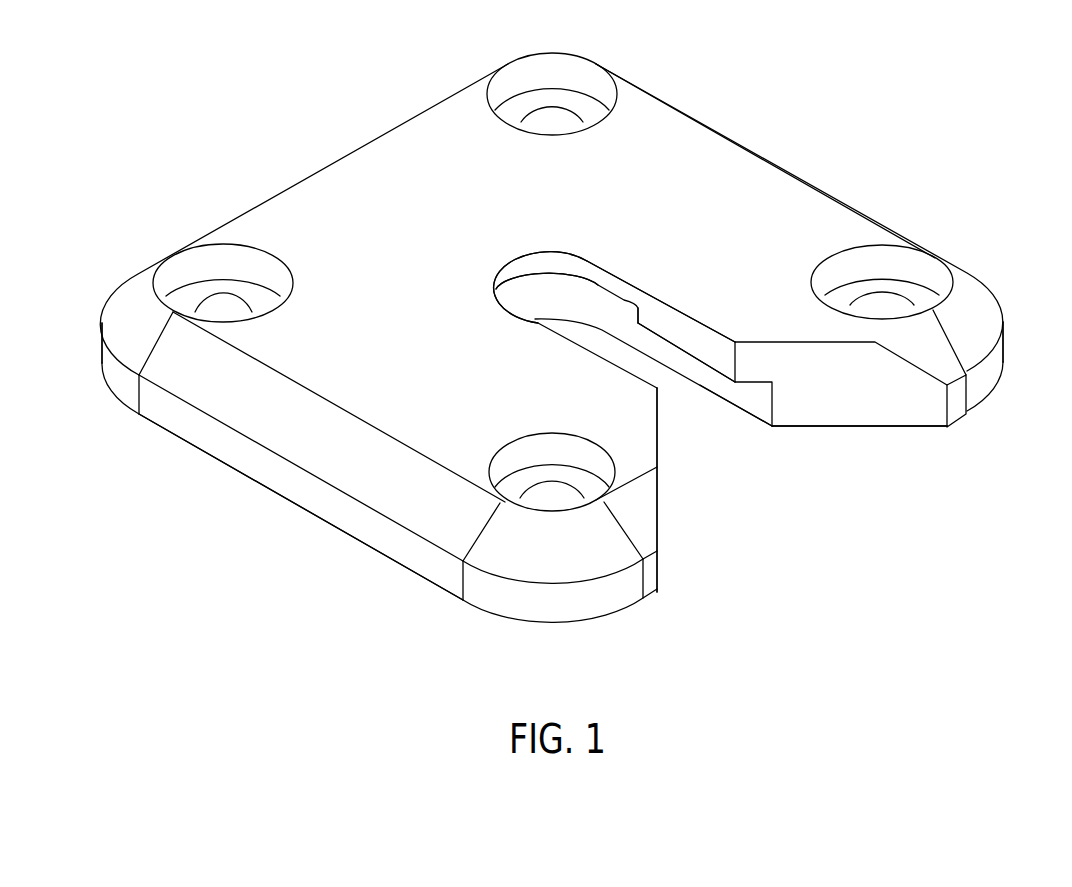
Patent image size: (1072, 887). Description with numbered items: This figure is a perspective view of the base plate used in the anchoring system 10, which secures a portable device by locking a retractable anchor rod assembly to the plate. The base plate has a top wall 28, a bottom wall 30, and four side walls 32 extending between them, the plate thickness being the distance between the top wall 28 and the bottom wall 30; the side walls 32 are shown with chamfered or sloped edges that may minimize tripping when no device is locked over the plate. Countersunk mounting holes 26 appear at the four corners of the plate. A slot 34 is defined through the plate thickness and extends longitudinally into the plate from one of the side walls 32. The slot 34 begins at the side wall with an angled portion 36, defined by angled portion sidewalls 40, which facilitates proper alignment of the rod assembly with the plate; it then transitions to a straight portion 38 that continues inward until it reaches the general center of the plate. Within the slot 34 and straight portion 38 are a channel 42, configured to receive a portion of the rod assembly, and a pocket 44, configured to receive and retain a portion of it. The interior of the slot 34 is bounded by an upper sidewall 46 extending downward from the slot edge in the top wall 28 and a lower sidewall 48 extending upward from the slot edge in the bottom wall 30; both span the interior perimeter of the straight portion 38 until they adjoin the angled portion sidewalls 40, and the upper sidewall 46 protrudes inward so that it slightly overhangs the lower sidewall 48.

The anchoring system 10 is at (245, 137).
The countersunk mounting holes 26 is at (552, 112).
The top wall 28 is at (740, 185).
The bottom wall 30 is at (392, 563).
The side walls 32 is at (292, 442).
The slot 34 is at (593, 242).
The angled portion 36 is at (798, 468).
The straight portion 38 is at (600, 307).
The angled portion sidewalls 40 is at (855, 397).
The channel 42 is at (673, 400).
The pocket 44 is at (552, 298).
The upper sidewall 46 is at (553, 254).
The lower sidewall 48 is at (535, 288).